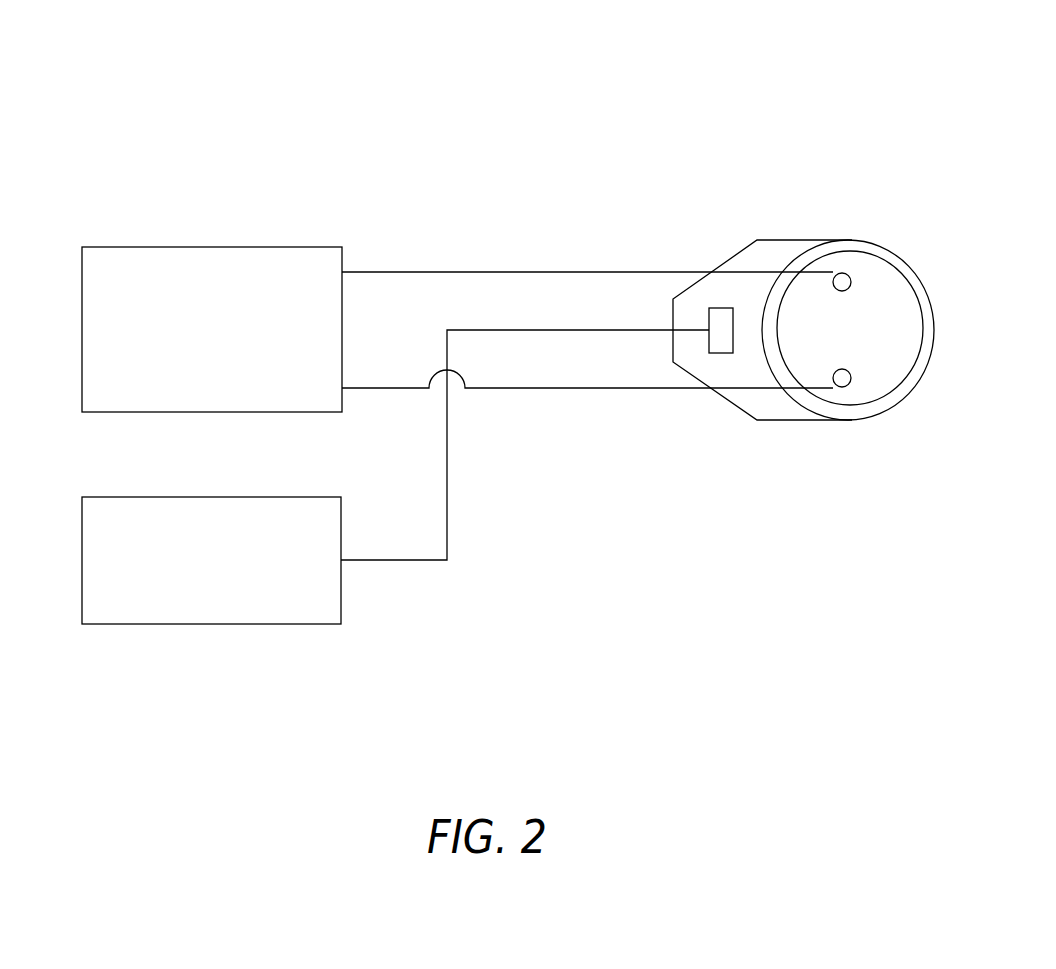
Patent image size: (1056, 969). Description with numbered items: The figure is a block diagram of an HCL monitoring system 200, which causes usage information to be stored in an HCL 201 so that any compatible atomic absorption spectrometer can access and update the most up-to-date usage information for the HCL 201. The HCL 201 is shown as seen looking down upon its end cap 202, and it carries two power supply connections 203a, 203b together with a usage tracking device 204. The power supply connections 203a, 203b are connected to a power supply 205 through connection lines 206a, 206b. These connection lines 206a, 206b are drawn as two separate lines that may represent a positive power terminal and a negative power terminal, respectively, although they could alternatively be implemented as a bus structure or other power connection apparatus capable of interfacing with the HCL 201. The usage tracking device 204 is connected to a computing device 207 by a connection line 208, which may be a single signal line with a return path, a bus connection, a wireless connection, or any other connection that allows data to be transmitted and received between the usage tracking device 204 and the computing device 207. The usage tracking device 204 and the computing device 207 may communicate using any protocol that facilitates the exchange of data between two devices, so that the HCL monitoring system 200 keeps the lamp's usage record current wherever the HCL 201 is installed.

The HCL monitoring system 200 is at (859, 112).
The HCL 201 is at (826, 232).
The end cap 202 is at (900, 257).
The power supply connection 203a is at (851, 285).
The power supply connection 203b is at (851, 378).
The usage tracking device 204 is at (722, 308).
The power supply 205 is at (212, 247).
The connection line 206a is at (508, 272).
The connection line 206b is at (508, 388).
The computing device 207 is at (211, 497).
The connection line 208 is at (393, 562).